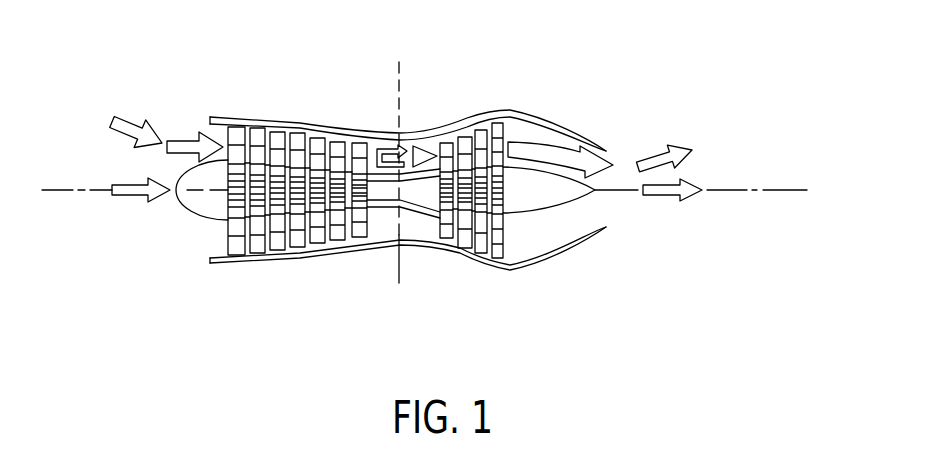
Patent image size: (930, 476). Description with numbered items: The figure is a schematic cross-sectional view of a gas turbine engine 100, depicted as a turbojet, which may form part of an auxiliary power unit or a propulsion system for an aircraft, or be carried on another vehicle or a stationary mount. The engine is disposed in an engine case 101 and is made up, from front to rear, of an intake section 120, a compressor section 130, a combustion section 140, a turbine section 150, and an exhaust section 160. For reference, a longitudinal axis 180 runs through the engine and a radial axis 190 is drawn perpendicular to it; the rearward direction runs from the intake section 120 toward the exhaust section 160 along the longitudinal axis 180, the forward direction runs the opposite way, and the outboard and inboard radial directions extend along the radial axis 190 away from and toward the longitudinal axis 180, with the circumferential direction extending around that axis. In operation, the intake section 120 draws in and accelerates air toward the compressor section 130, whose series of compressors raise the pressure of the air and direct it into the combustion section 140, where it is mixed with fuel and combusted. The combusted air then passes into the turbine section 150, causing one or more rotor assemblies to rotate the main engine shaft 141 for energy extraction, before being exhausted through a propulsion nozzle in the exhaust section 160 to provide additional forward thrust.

The gas turbine engine 100 is at (190, 89).
The engine case 101 is at (294, 118).
The intake section 120 is at (225, 282).
The compressor section 130 is at (400, 282).
The combustion section 140 is at (437, 282).
The main engine shaft 141 is at (413, 188).
The turbine section 150 is at (500, 282).
The exhaust section 160 is at (607, 282).
The longitudinal axis 180 is at (765, 190).
The radial axis 190 is at (400, 83).